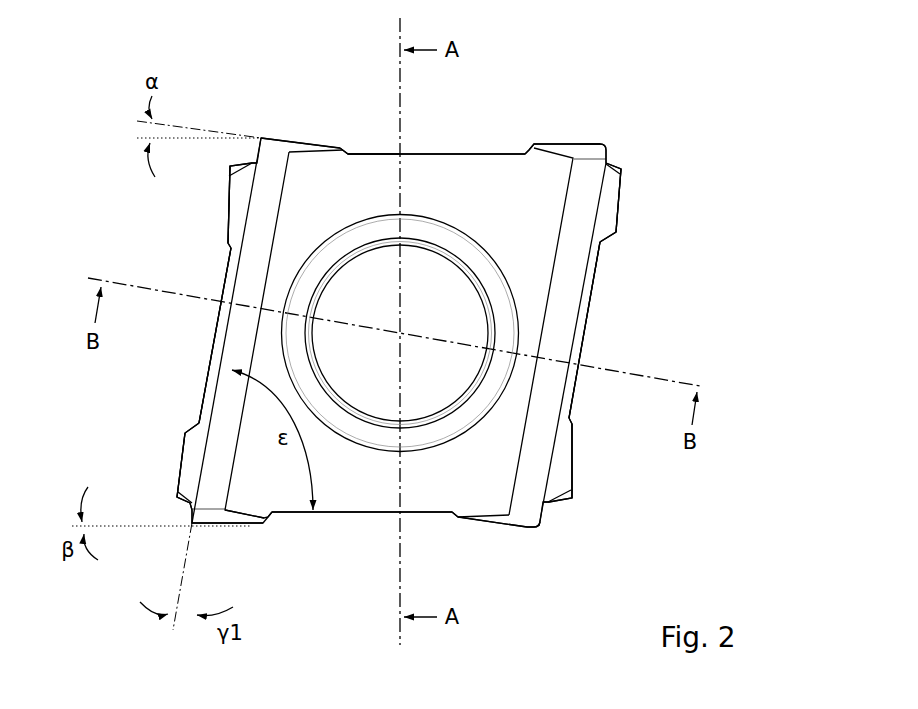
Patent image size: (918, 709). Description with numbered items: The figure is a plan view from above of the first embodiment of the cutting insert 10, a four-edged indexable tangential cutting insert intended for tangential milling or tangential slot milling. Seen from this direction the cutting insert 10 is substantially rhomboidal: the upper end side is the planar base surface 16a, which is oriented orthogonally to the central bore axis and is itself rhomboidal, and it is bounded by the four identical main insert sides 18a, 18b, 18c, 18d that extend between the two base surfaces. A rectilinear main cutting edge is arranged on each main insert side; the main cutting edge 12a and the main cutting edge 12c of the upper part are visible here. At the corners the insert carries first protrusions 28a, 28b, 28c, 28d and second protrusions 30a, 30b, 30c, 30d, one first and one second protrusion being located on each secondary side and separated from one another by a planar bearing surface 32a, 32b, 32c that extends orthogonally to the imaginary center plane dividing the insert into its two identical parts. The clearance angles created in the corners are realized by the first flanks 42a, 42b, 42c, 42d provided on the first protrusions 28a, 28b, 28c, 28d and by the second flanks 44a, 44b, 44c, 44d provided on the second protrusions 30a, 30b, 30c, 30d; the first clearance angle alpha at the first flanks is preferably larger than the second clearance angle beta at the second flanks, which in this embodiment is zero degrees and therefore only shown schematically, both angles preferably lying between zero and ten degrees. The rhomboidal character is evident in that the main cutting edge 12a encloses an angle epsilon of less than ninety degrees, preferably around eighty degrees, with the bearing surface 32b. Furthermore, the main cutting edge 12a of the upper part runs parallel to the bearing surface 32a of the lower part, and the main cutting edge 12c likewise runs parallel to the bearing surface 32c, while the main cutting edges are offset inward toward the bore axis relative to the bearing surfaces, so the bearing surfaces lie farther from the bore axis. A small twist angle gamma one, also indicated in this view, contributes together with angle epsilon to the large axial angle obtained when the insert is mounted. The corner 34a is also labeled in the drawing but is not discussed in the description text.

The cutting insert 10 is at (703, 108).
The main cutting edge 12a is at (228, 277).
The main cutting edge 12c is at (587, 280).
The base surface 16a is at (518, 186).
The main insert side 18a is at (183, 378).
The main insert side 18b is at (352, 540).
The main insert side 18c is at (608, 325).
The main insert side 18d is at (463, 128).
The first protrusion 28a is at (291, 139).
The first protrusion 28b is at (528, 529).
The first protrusion 28c is at (565, 484).
The first protrusion 28d is at (235, 206).
The second protrusion 30a is at (227, 526).
The second protrusion 30b is at (194, 452).
The second protrusion 30c is at (594, 142).
The second protrusion 30d is at (617, 197).
The bearing surface 32a is at (220, 345).
The bearing surface 32b is at (325, 514).
The bearing surface 32c is at (581, 352).
The corner 34a is at (262, 137).
The first flank 42a is at (328, 142).
The first flank 42b is at (493, 529).
The first flank 42c is at (576, 457).
The first flank 42d is at (222, 222).
The second flank 44a is at (223, 527).
The second flank 44b is at (179, 482).
The second flank 44c is at (562, 142).
The second flank 44d is at (616, 220).